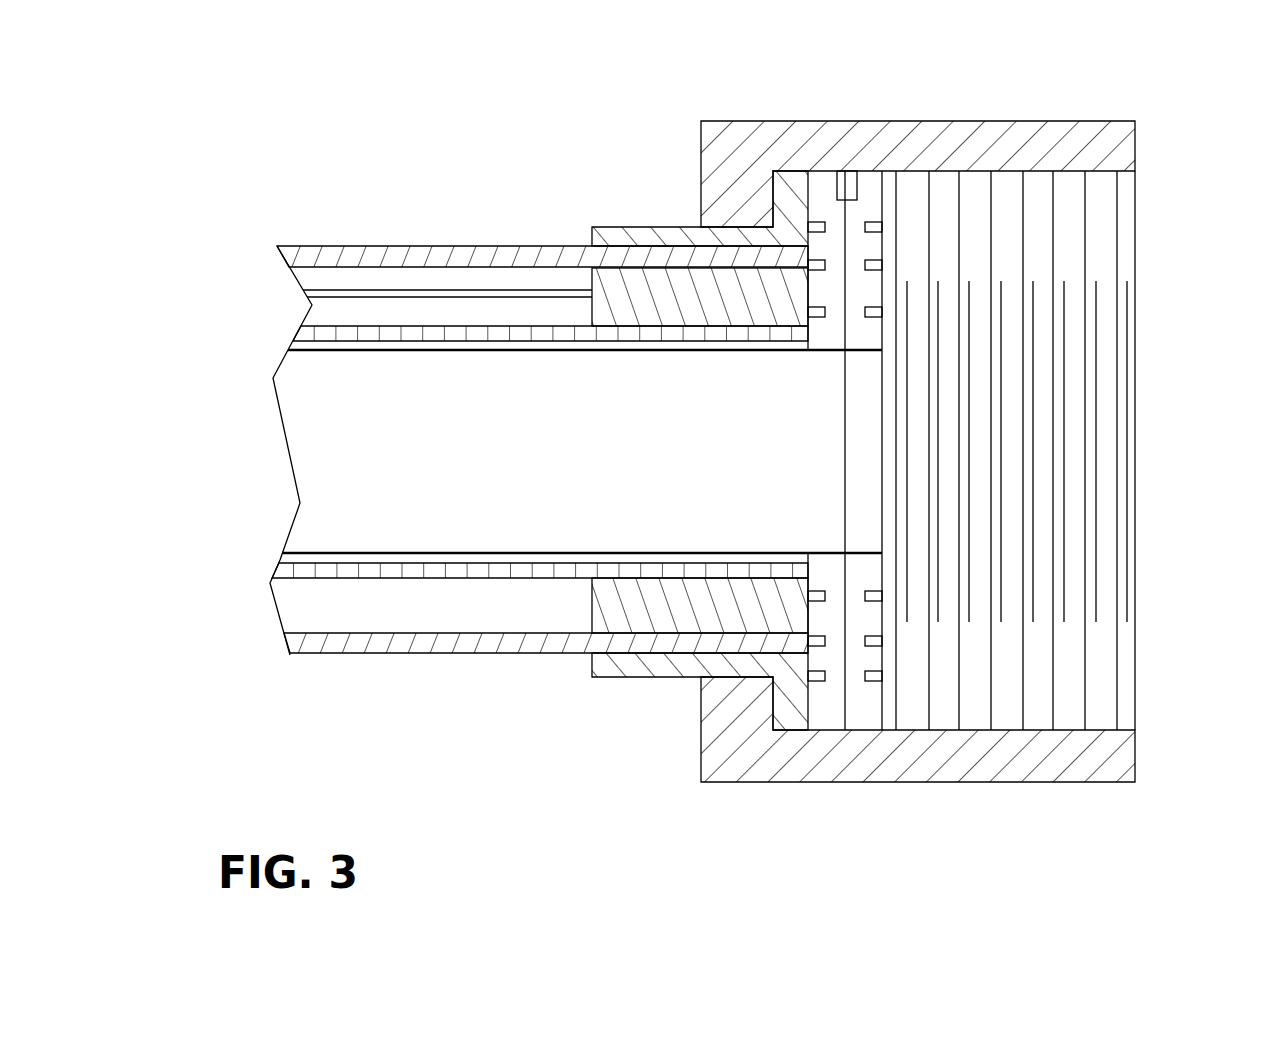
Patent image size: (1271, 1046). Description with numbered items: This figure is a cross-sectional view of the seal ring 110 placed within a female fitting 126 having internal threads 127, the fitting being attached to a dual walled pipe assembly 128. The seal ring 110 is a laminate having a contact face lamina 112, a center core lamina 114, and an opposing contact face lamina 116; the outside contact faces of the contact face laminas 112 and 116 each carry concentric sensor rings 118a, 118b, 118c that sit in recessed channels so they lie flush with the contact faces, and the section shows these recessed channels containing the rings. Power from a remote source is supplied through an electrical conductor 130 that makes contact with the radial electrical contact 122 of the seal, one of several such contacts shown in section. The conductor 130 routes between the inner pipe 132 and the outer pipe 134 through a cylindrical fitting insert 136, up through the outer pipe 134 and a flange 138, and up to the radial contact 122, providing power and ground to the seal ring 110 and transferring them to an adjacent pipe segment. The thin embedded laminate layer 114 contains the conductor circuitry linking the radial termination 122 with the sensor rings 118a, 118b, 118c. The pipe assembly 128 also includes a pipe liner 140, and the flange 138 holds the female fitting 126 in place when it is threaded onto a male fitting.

The seal ring 110 is at (865, 185).
The contact face lamina 112 is at (793, 738).
The center core lamina 114 is at (838, 705).
The opposing contact face lamina 116 is at (867, 729).
The sensor ring 118a is at (808, 596).
The sensor ring 118b is at (808, 641).
The sensor ring 118c is at (808, 677).
The voltage electrical contact 122 is at (835, 195).
The female fitting 126 is at (1097, 143).
The internal threads 127 is at (1070, 730).
The pipe assembly 128 is at (405, 212).
The electrical conductor 130 is at (510, 290).
The inner pipe 132 is at (312, 572).
The outer pipe 134 is at (327, 246).
The cylindrical fitting insert 136 is at (620, 285).
The flange 138 is at (668, 242).
The pipe liner 140 is at (440, 557).